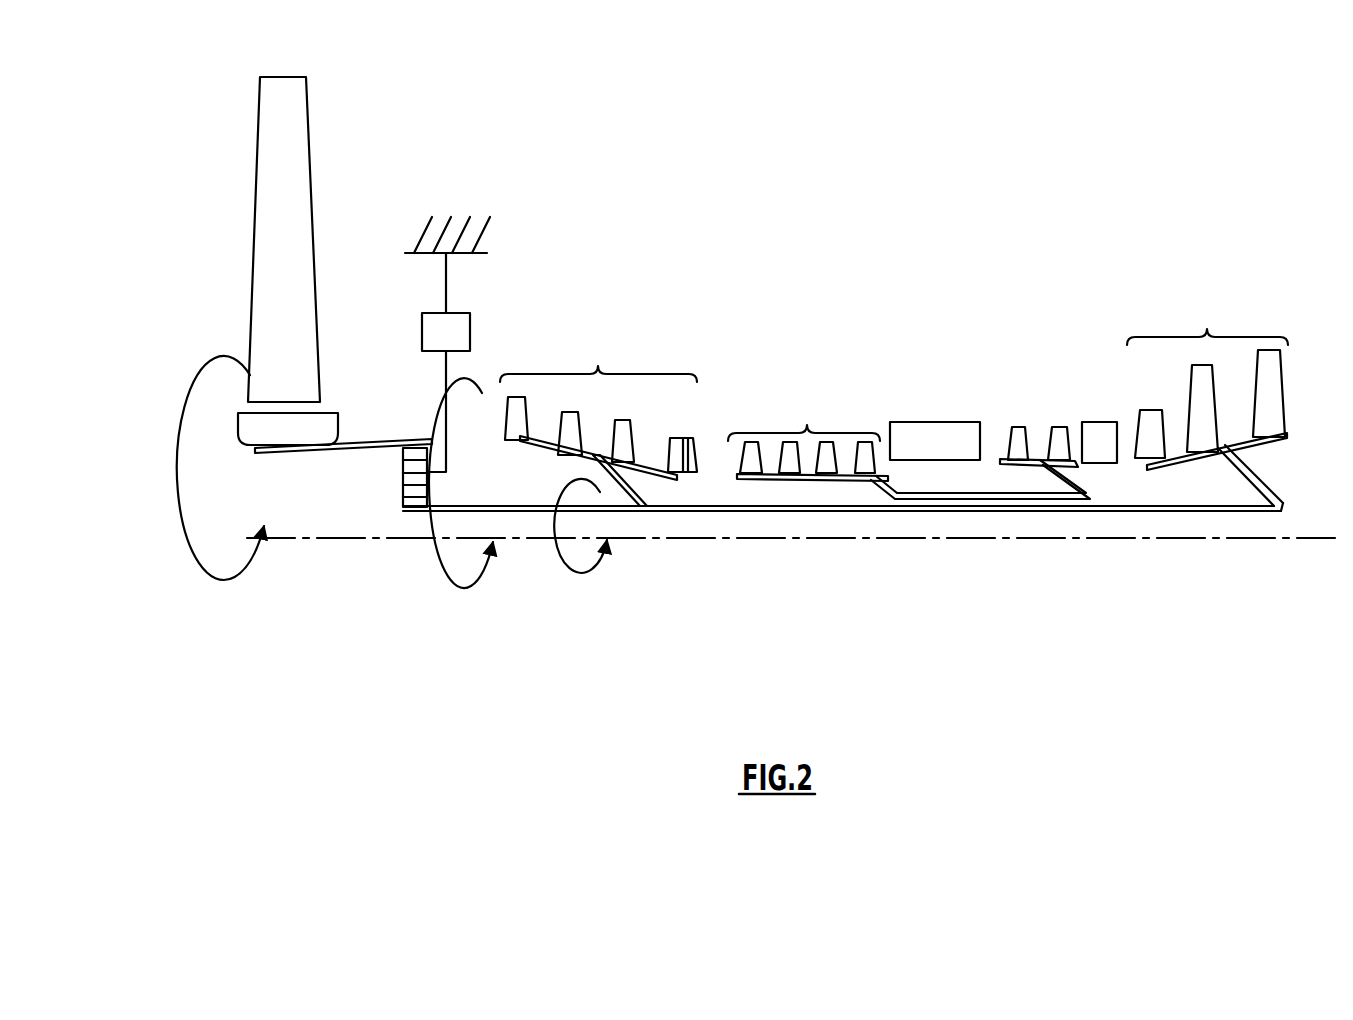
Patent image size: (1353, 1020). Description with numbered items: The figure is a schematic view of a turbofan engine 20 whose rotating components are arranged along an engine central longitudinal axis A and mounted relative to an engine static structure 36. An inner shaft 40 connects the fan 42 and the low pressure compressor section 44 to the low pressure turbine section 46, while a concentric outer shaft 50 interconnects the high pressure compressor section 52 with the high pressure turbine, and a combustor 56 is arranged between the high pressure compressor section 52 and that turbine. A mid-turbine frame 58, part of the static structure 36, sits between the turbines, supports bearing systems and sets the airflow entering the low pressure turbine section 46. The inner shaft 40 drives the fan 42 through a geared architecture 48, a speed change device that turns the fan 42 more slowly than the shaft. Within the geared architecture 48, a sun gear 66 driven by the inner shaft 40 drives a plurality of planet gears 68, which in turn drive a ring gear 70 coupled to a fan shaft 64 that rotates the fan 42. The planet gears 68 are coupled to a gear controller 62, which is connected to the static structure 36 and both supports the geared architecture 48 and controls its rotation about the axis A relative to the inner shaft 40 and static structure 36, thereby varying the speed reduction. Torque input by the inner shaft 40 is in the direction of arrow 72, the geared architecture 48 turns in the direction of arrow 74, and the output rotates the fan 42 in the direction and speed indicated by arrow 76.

The turbofan engine 20 is at (201, 206).
The engine static structure 36 is at (483, 242).
The inner shaft 40 is at (1222, 512).
The fan 42 is at (262, 135).
The low pressure compressor section 44 is at (598, 372).
The low pressure turbine section 46 is at (1207, 330).
The geared architecture 48 is at (401, 514).
The outer shaft 50 is at (1008, 486).
The high pressure compressor section 52 is at (807, 428).
The combustor 56 is at (935, 435).
The mid-turbine frame 58 is at (1108, 430).
The gear controller 62 is at (470, 337).
The fan shaft 64 is at (368, 452).
The sun gear 66 is at (420, 495).
The planet gears 68 is at (408, 468).
The ring gear 70 is at (413, 450).
The arrow 72 is at (580, 573).
The arrow 74 is at (460, 590).
The arrow 76 is at (195, 577).
The engine central longitudinal axis A is at (317, 537).